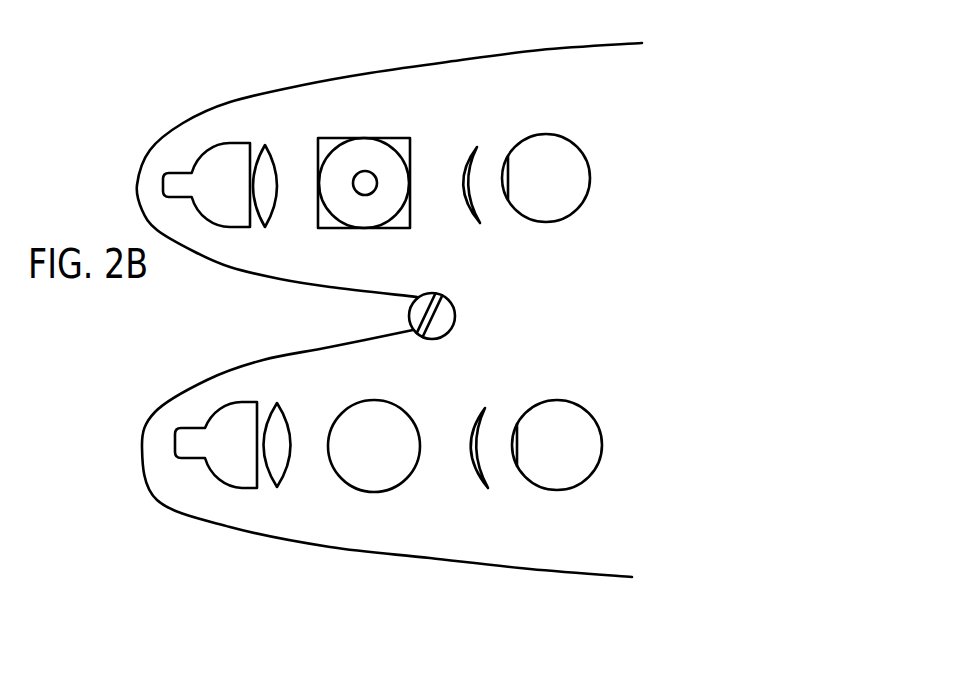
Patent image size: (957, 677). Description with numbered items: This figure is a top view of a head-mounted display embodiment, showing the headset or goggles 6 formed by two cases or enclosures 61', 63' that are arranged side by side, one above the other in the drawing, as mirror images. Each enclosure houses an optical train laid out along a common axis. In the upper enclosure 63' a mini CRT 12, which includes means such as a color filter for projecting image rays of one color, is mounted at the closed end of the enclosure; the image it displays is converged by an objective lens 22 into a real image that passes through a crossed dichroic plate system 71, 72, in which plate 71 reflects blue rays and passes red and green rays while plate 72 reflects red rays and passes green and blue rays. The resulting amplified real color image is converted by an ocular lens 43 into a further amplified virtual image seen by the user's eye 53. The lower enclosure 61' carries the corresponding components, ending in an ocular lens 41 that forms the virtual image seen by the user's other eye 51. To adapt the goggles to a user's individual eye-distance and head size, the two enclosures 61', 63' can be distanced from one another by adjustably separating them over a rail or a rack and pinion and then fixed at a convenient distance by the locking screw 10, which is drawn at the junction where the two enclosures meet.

The headset or goggles 6 is at (583, 46).
The case or enclosure 63' is at (389, 170).
The case or enclosure 61' is at (387, 453).
The locking screw 10 is at (455, 305).
The mini CRT 12 is at (223, 142).
The objective lens 22 is at (265, 147).
The dichroic plate 71 is at (348, 138).
The dichroic plate 72 is at (382, 162).
The ocular lens 43 is at (475, 145).
The user's eye 53 is at (580, 143).
The ocular lens 41 is at (484, 407).
The user's eye 51 is at (577, 405).